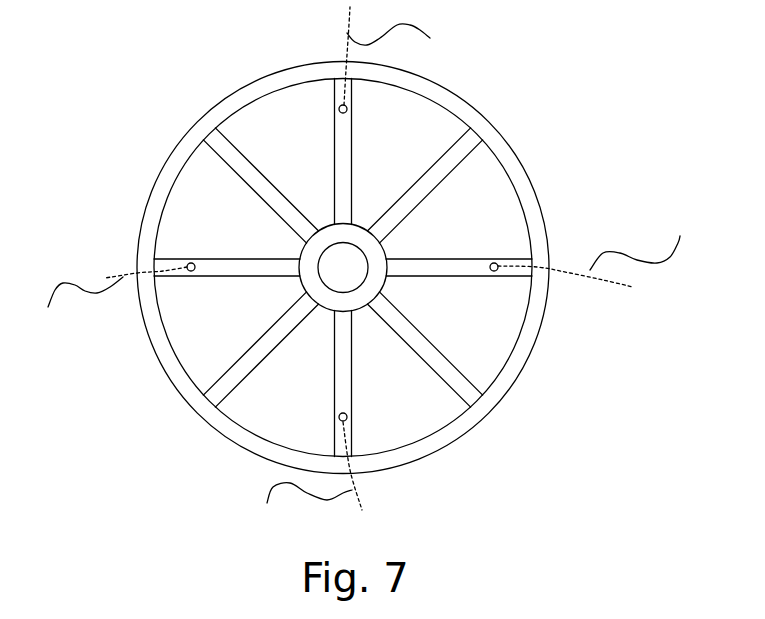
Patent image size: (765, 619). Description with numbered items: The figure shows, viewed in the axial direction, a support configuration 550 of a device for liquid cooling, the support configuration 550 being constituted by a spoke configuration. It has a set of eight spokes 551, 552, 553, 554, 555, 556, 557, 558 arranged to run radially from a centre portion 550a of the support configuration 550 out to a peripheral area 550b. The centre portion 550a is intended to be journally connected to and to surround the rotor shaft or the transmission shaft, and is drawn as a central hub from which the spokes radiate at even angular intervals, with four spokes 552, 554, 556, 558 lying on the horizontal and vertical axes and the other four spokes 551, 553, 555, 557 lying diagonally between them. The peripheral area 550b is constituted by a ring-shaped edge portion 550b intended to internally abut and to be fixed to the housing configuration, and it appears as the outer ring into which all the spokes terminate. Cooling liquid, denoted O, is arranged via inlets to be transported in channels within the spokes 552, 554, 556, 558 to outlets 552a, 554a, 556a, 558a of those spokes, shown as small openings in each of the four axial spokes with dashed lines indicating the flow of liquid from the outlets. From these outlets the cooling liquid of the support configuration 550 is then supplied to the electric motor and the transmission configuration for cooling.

The support configuration 550 is at (552, 68).
The centre portion 550a is at (357, 225).
The peripheral area 550b is at (158, 368).
The spoke 551 is at (250, 369).
The spoke 552 is at (230, 278).
The outlet 552a is at (189, 263).
The spoke 553 is at (237, 175).
The spoke 554 is at (327, 127).
The outlet 554a is at (341, 105).
The spoke 555 is at (450, 180).
The spoke 556 is at (457, 255).
The outlet 556a is at (495, 271).
The spoke 557 is at (447, 357).
The spoke 558 is at (354, 377).
The outlet 558a is at (347, 421).